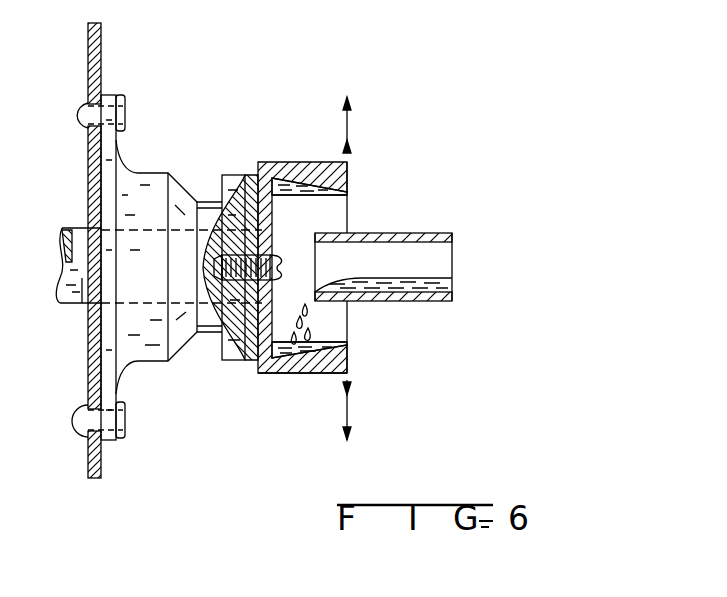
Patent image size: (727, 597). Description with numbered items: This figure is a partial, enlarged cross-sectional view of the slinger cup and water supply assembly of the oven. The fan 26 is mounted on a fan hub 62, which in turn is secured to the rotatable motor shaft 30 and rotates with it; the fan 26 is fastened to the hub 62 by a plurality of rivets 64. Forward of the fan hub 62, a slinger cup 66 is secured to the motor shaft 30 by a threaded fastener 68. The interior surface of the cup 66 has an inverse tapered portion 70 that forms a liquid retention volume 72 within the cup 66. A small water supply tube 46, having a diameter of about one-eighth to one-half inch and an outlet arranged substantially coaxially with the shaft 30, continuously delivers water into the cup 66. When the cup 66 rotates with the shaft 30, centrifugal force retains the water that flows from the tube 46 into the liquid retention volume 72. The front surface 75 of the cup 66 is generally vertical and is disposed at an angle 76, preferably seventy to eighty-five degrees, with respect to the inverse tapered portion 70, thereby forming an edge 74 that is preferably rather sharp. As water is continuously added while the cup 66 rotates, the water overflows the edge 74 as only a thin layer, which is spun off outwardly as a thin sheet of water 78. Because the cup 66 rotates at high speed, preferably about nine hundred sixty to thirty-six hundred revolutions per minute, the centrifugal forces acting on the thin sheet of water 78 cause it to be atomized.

The fan 26 is at (102, 43).
The motor shaft 30 is at (70, 232).
The water supply tube 46 is at (413, 232).
The fan hub 62 is at (148, 188).
The rivets 64 is at (84, 108).
The slinger cup 66 is at (300, 172).
The threaded fastener 68 is at (262, 262).
The inverse tapered portion 70 is at (320, 378).
The liquid retention volume 72 is at (305, 346).
The edge 74 is at (347, 197).
The front surface 75 is at (348, 360).
The angle 76 is at (328, 178).
The thin sheet of water 78 is at (350, 118).